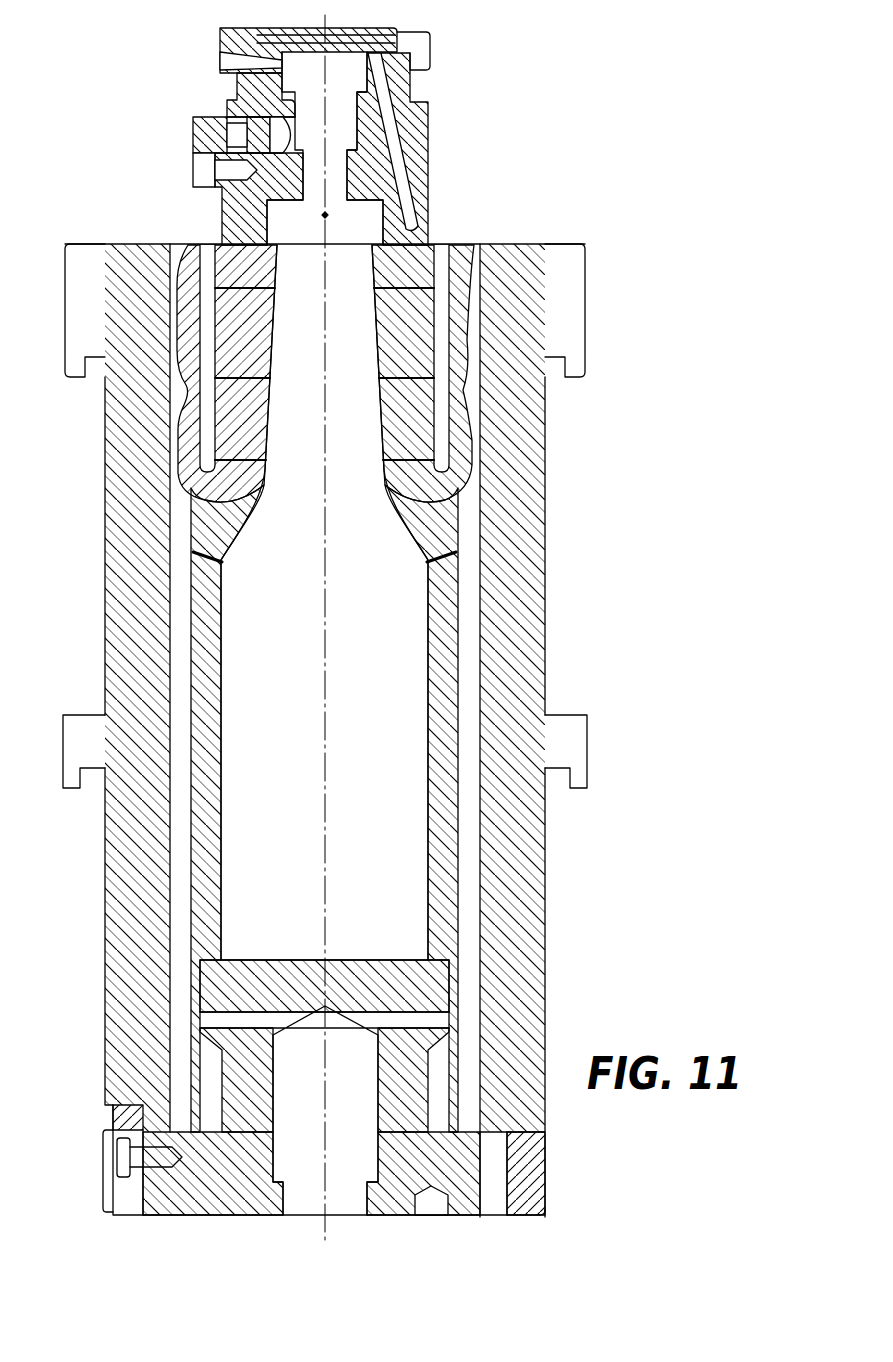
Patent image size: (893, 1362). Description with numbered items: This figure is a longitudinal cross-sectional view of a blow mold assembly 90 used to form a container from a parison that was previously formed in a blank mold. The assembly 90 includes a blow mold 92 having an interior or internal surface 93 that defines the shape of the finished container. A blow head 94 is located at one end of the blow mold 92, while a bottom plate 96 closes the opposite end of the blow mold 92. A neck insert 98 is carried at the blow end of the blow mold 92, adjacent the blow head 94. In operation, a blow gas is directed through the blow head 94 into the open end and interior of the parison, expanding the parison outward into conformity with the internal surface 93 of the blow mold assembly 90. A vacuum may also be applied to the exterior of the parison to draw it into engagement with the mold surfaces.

The blow mold assembly 90 is at (583, 477).
The blow mold 92 is at (457, 657).
The interior or internal surface 93 is at (399, 789).
The blow head 94 is at (492, 106).
The bottom plate 96 is at (165, 1240).
The neck insert 98 is at (462, 245).